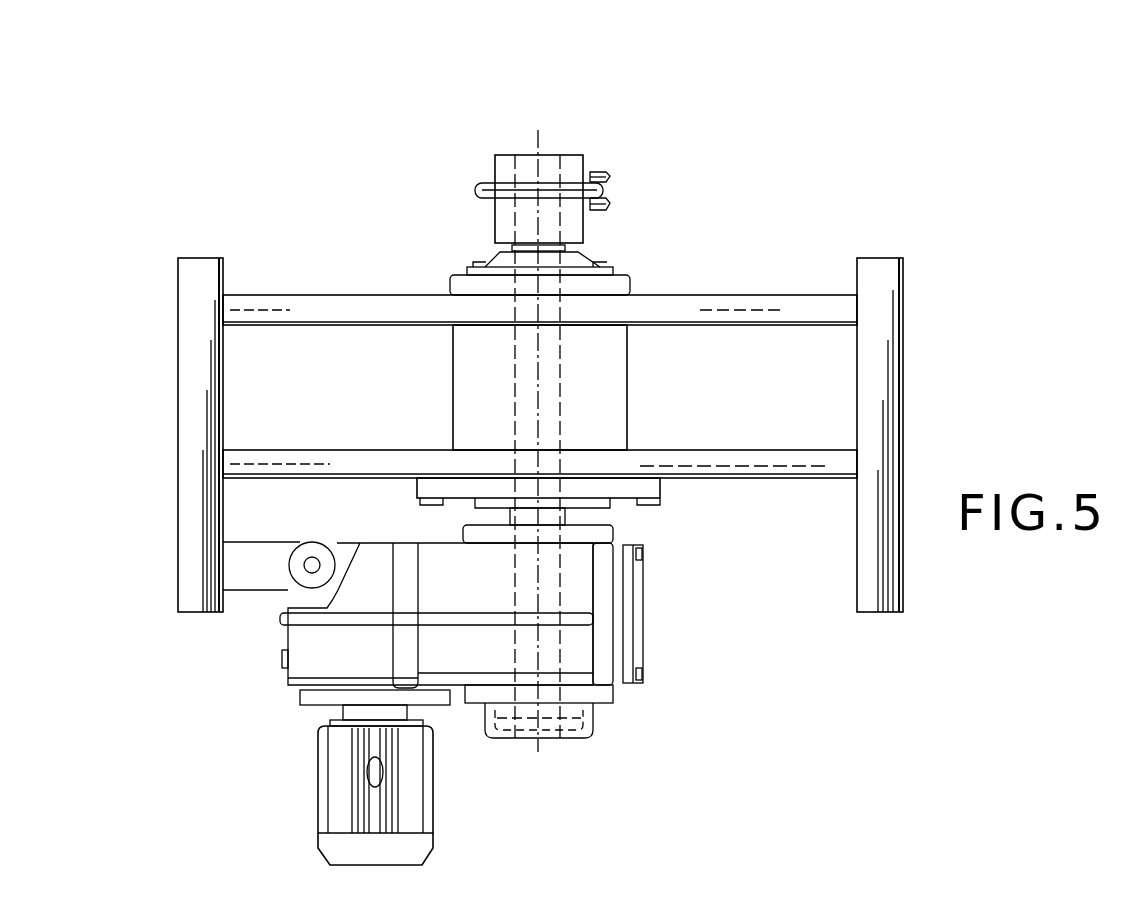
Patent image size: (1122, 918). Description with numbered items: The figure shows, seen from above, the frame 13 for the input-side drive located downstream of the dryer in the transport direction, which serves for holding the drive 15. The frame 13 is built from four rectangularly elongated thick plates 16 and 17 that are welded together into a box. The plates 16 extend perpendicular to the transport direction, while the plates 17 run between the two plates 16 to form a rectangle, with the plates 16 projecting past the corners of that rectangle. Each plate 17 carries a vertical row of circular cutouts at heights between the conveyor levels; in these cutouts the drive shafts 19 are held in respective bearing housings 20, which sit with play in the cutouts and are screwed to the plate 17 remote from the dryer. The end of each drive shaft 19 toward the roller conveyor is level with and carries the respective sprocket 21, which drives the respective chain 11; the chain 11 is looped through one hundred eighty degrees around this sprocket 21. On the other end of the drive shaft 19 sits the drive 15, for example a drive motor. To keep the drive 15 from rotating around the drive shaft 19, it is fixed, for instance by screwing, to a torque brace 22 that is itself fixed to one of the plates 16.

The chain 11 is at (607, 165).
The frame 13 is at (552, 122).
The drive 15 is at (492, 648).
The plates 16 is at (192, 311).
The plates 17 is at (812, 306).
The drive shaft 19 is at (520, 160).
The bearing housing 20 is at (617, 391).
The sprocket 21 is at (477, 183).
The torque brace 22 is at (252, 572).